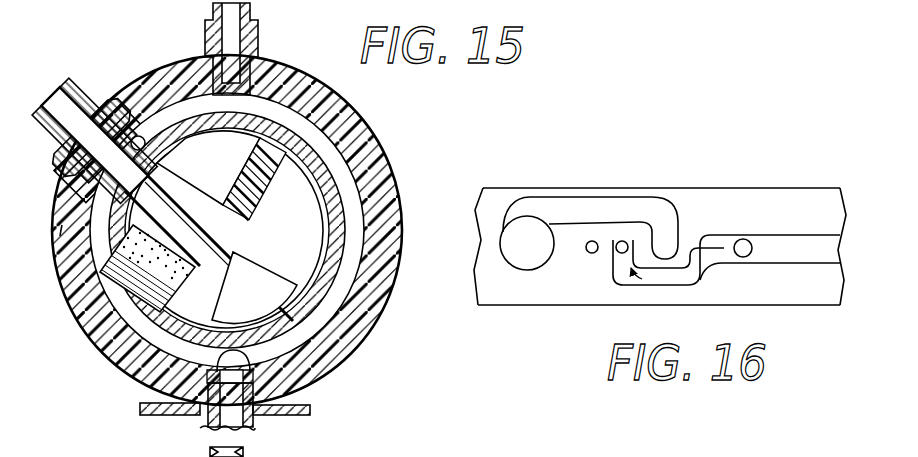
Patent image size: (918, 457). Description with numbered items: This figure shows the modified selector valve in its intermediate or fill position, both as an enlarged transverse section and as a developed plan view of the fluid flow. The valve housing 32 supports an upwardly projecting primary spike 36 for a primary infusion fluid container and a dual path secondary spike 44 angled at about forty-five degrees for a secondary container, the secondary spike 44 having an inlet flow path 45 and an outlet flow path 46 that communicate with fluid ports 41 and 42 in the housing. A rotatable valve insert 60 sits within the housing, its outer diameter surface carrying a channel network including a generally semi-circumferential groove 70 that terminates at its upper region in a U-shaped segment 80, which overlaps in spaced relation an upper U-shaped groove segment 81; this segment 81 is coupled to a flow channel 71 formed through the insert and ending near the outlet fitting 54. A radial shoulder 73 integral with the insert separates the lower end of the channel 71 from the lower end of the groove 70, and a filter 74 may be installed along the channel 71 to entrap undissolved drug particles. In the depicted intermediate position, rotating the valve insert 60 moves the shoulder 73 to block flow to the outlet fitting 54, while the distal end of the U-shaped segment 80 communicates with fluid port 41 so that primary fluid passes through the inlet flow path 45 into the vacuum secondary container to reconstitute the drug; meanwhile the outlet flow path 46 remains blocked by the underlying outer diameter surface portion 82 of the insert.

In FIG. 15, the valve housing 32 is at (399, 171).
In FIG. 15, the primary spike 36 is at (261, 40).
In FIG. 16, the primary spike 36 is at (745, 238).
In FIG. 16, the fluid port 41 is at (628, 238).
In FIG. 16, the fluid port 42 is at (594, 240).
In FIG. 15, the dual path secondary spike 44 is at (72, 118).
In FIG. 15, the inlet flow path 45 is at (92, 126).
In FIG. 15, the outlet flow path 46 is at (76, 134).
In FIG. 15, the outlet fitting 54 is at (255, 425).
In FIG. 15, the valve insert 60 is at (326, 148).
In FIG. 16, the valve insert 60 is at (812, 188).
In FIG. 16, the semi-circumferential groove 70 is at (797, 258).
In FIG. 16, the flow channel 71 is at (518, 262).
In FIG. 15, the radial shoulder 73 is at (142, 372).
In FIG. 15, the filter 74 is at (100, 298).
In FIG. 15, the U-shaped segment 80 is at (150, 146).
In FIG. 16, the U-shaped segment 80 is at (687, 290).
In FIG. 16, the U-shaped groove segment 81 is at (577, 195).
In FIG. 15, the outer diameter surface portion 82 is at (62, 237).
In FIG. 16, the outer diameter surface portion 82 is at (577, 260).